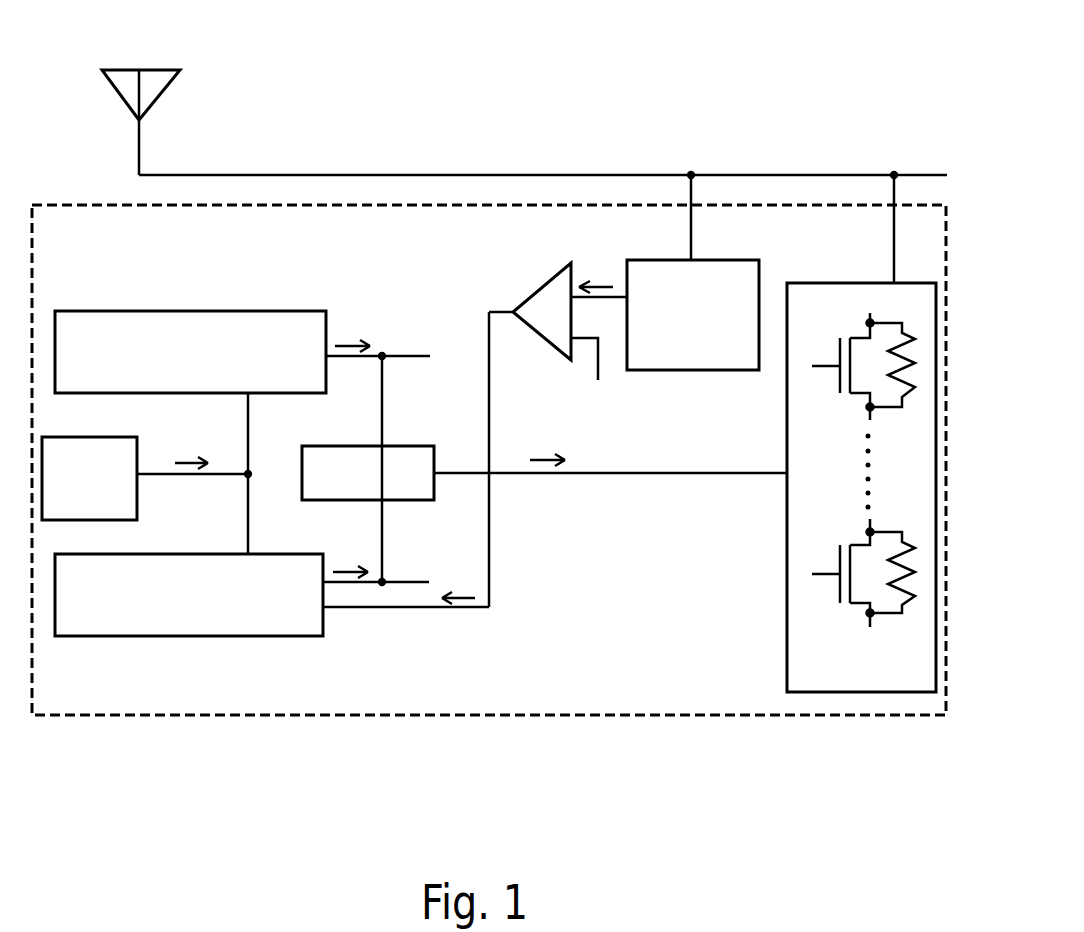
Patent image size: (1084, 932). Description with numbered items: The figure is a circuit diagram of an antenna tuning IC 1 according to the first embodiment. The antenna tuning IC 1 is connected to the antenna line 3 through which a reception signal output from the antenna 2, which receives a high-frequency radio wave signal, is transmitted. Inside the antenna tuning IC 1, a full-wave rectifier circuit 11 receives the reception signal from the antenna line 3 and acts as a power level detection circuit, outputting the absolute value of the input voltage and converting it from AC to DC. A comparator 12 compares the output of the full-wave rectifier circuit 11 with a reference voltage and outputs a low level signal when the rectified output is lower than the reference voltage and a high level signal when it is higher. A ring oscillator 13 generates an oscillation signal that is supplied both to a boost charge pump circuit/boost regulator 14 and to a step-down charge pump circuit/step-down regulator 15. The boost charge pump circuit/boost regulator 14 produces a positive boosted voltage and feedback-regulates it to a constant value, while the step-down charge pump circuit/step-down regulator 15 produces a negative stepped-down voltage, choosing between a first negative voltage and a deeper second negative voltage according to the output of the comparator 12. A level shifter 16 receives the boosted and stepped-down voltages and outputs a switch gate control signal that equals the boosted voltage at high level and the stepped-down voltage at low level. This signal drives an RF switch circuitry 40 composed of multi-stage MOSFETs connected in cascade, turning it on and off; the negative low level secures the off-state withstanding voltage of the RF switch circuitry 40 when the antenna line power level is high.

The antenna tuning IC 1 is at (44, 205).
The antenna 2 is at (181, 69).
The antenna line 3 is at (542, 175).
The full-wave rectifier circuit 11 is at (720, 260).
The comparator 12 is at (574, 270).
The ring oscillator 13 is at (58, 437).
The boost charge pump circuit/boost regulator 14 is at (250, 311).
The step-down charge pump circuit/step-down regulator 15 is at (275, 554).
The level shifter 16 is at (395, 446).
The RF switch circuitry 40 is at (818, 283).